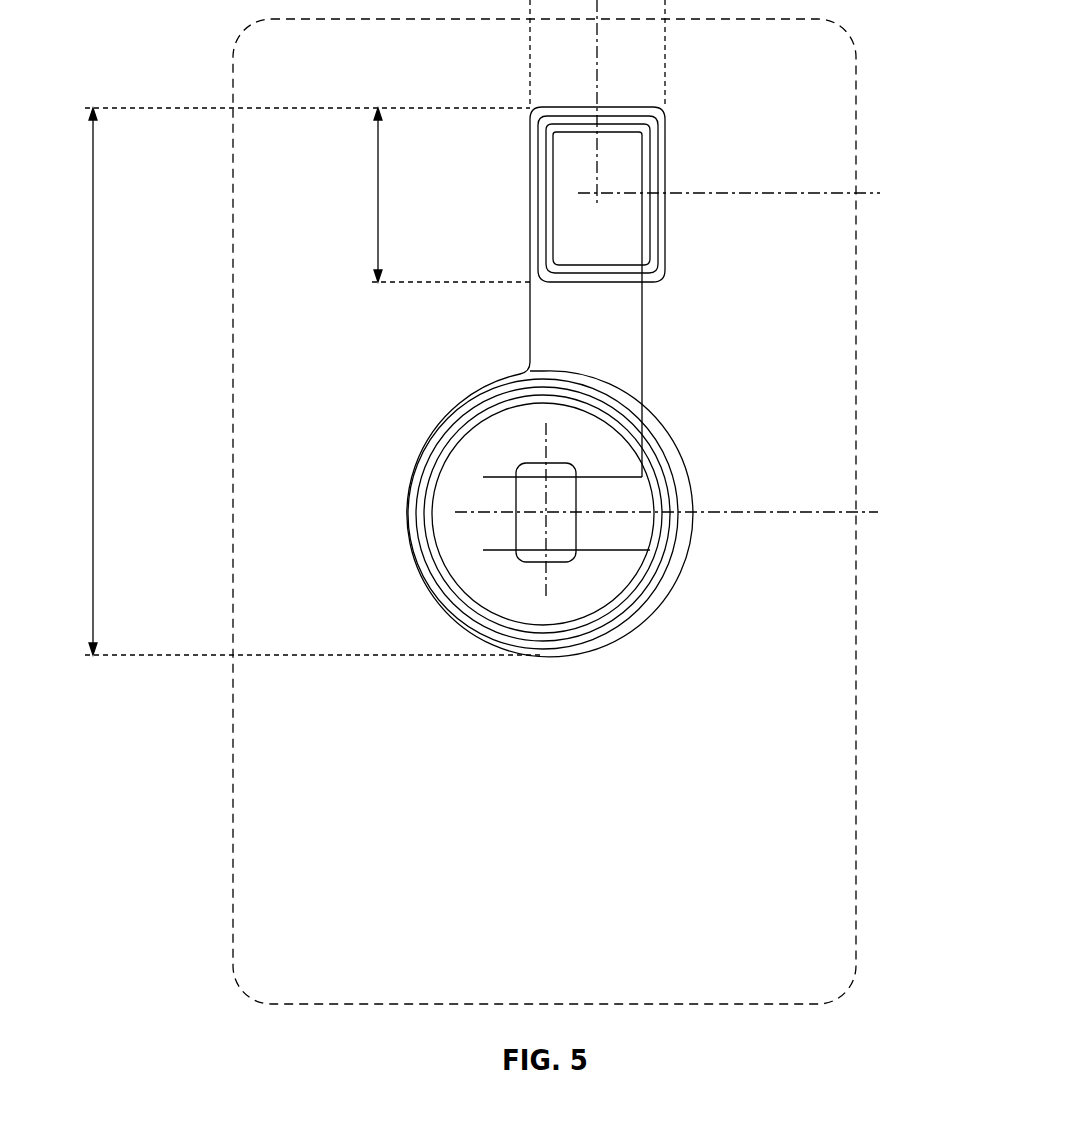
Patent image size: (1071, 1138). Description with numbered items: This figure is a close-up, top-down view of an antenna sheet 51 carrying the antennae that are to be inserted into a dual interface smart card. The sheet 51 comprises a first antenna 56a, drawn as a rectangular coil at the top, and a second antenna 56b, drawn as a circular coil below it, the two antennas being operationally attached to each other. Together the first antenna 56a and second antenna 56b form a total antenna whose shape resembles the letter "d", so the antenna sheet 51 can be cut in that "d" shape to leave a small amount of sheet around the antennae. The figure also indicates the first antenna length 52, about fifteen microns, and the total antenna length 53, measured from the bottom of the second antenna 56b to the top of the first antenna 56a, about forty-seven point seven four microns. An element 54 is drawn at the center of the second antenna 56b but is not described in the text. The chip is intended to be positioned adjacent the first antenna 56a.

The antenna sheet 51 is at (255, 830).
The first antenna length 52 is at (378, 194).
The total antenna length 53 is at (93, 382).
The chip / connection element 54 is at (560, 490).
The first antenna 56a is at (877, 0).
The second antenna 56b is at (418, 478).